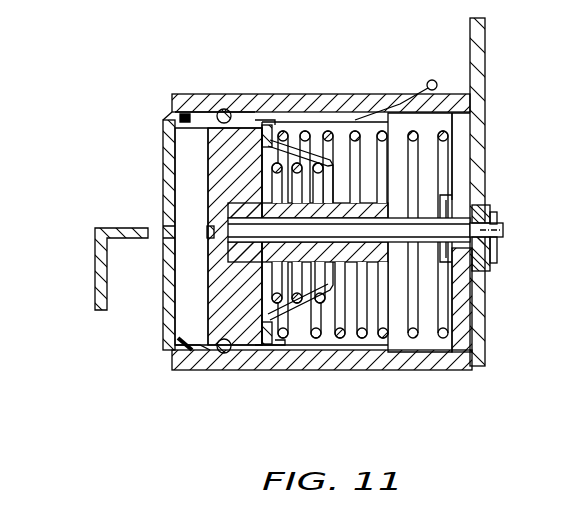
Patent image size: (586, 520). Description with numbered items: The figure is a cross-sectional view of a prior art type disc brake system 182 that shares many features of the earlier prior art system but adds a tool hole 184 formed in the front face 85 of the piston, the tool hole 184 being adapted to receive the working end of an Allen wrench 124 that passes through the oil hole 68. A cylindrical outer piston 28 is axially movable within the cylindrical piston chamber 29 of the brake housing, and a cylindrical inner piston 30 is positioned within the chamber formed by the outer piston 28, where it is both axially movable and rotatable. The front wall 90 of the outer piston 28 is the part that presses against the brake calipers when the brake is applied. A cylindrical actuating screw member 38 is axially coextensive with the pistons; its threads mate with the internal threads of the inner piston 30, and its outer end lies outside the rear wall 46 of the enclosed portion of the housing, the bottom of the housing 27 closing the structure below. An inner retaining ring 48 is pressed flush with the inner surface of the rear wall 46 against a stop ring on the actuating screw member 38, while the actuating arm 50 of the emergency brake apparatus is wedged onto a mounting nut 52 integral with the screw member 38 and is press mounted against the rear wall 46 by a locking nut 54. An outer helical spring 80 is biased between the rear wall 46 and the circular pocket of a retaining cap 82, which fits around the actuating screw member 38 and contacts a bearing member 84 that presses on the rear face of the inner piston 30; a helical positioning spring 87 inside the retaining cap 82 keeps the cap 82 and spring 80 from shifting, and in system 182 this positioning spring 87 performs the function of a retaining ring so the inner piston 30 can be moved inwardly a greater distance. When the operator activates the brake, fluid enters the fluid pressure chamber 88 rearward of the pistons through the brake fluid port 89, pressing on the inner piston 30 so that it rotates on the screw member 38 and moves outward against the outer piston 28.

The disc brake system 182 is at (160, 66).
The actuating arm 50 is at (480, 76).
The rear wall 46 is at (462, 326).
The housing bottom wall 27 is at (420, 360).
The front wall 90 is at (166, 188).
The inner piston 30 is at (212, 184).
The actuating screw member 38 is at (378, 212).
The fluid pressure chamber 88 is at (362, 120).
The outer helical spring 80 is at (302, 330).
The locking nut 54 is at (505, 240).
The mounting nut 52 is at (492, 252).
The inner retaining ring 48 is at (450, 200).
The retaining cap 82 is at (300, 135).
The bearing member 84 is at (272, 140).
The outer piston 28 is at (268, 122).
The helical positioning spring 87 is at (276, 292).
The piston chamber 29 is at (188, 148).
The front face 85 is at (190, 292).
The tool hole 184 is at (209, 240).
The oil hole 68 is at (166, 232).
The Allen wrench 124 is at (96, 288).
The brake fluid port 89 is at (432, 80).